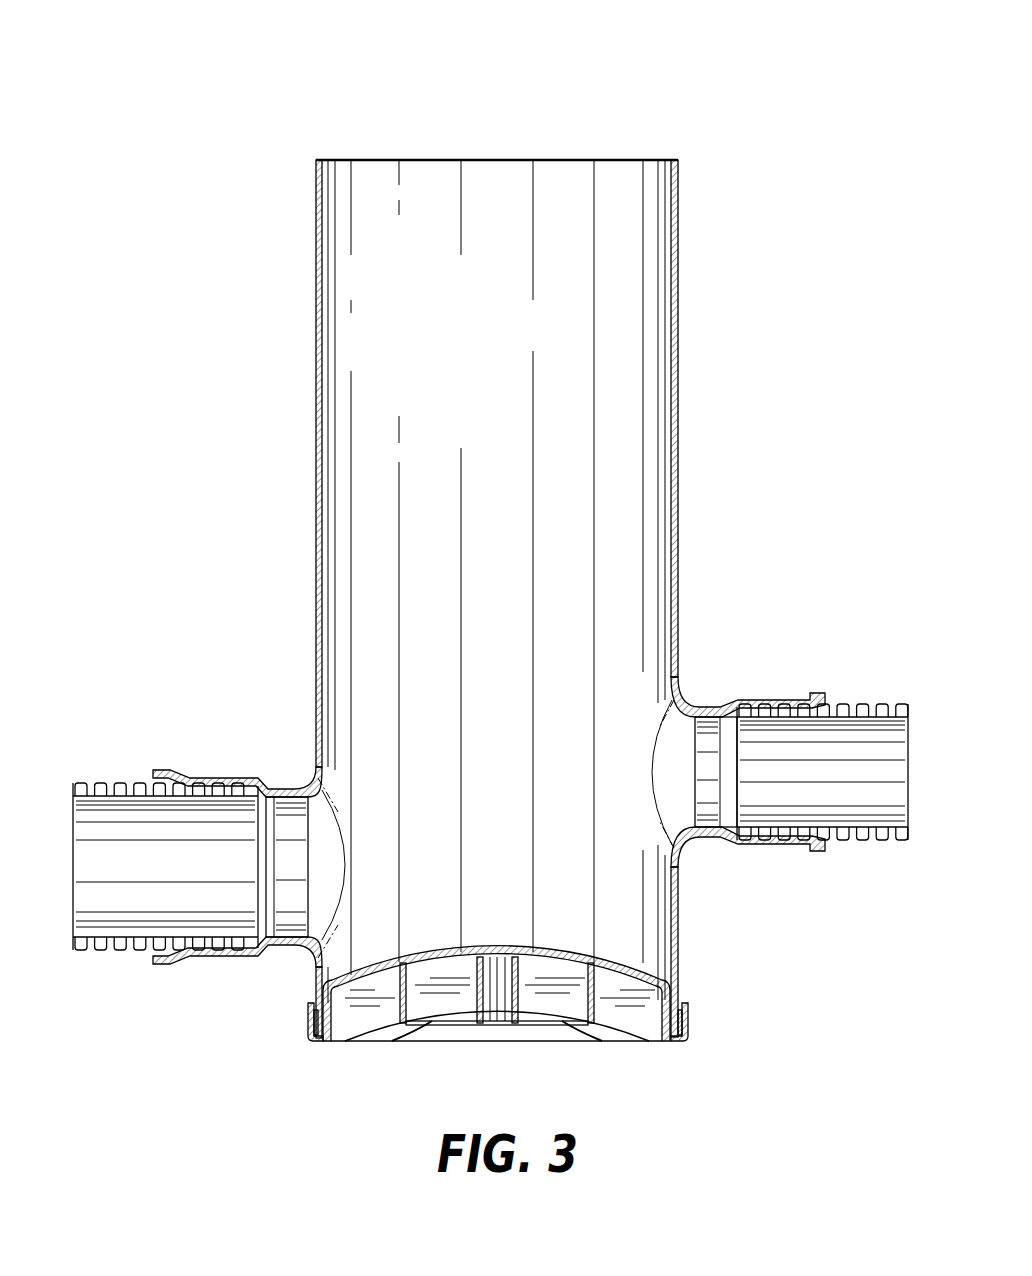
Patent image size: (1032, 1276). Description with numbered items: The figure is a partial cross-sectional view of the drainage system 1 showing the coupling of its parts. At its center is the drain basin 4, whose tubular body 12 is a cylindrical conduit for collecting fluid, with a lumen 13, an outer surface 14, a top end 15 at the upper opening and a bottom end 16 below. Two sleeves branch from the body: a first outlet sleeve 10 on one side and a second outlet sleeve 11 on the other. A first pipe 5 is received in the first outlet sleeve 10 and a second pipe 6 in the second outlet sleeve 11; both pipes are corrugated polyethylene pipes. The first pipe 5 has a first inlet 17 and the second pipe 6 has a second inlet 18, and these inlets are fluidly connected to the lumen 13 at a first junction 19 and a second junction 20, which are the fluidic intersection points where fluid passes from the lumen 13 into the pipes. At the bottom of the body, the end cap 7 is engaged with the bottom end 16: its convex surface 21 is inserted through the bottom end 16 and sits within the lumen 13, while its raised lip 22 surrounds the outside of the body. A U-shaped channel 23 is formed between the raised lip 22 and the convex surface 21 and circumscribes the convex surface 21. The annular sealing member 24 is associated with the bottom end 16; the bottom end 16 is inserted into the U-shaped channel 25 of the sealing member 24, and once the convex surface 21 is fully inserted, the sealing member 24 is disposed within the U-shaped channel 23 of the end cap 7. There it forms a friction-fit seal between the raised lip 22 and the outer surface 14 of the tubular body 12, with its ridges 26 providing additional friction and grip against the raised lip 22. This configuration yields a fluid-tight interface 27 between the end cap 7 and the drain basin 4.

The drainage system 1 is at (490, 563).
The drain basin 4 is at (489, 555).
The first pipe 5 is at (100, 784).
The second pipe 6 is at (900, 704).
The end cap 7 is at (496, 987).
The first outlet sleeve 10 is at (218, 778).
The second outlet sleeve 11 is at (820, 694).
The tubular body 12 is at (680, 470).
The lumen 13 is at (512, 456).
The outer surface 14 is at (682, 942).
The top end 15 is at (553, 160).
The bottom end 16 is at (676, 1042).
The first inlet 17 is at (324, 897).
The second inlet 18 is at (692, 786).
The first junction 19 is at (335, 870).
The second junction 20 is at (648, 764).
The convex surface 21 is at (497, 945).
The raised lip 22 is at (689, 1007).
The U-shaped channel 23 is at (310, 1008).
The sealing member 24 is at (310, 1040).
The U-shaped channel 25 is at (663, 1032).
The ridges 26 is at (686, 1028).
The fluid-tight interface 27 is at (692, 1022).